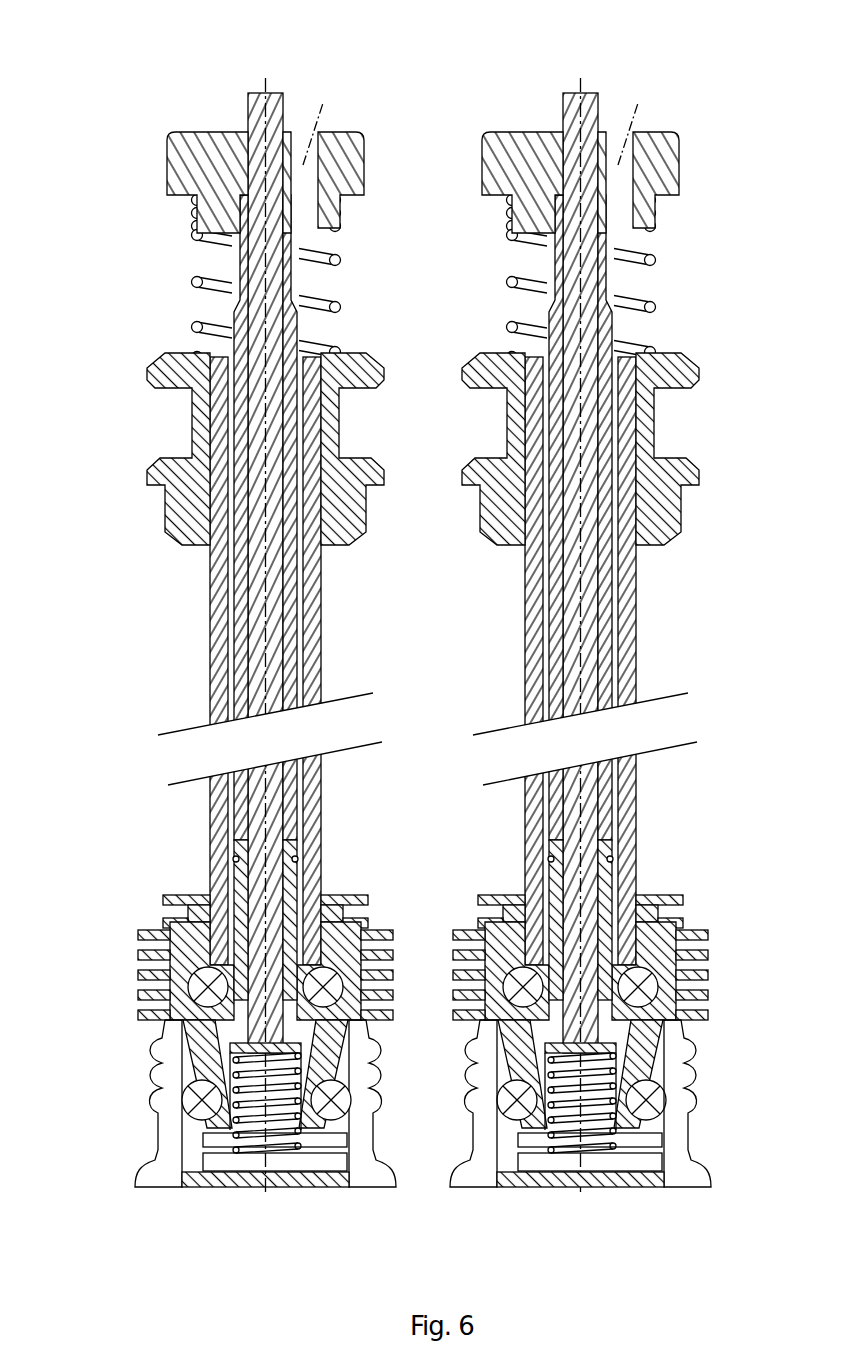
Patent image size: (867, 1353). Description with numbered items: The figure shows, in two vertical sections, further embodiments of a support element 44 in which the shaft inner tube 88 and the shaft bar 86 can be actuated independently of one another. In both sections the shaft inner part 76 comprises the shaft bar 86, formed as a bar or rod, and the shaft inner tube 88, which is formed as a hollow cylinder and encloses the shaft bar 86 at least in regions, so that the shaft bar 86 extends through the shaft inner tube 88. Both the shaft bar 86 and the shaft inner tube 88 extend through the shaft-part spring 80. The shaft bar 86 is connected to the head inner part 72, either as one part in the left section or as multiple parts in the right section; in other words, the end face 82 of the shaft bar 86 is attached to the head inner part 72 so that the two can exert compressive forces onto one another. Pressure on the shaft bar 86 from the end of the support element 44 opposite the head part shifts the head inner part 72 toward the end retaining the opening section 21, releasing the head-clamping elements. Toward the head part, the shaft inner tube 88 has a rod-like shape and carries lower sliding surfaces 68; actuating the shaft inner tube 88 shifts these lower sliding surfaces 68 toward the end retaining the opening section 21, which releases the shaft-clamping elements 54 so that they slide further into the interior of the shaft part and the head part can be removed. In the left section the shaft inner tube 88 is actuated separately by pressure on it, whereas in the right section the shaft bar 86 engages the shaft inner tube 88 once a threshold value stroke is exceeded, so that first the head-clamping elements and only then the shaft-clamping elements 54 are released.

The support element 44 is at (232, 92).
The shaft-part spring 80 is at (196, 280).
The shaft inner part 76 is at (240, 457).
The shaft bar 86 is at (262, 620).
The shaft inner tube 88 is at (237, 664).
The shaft-clamping elements 54 is at (152, 943).
The lower sliding surfaces 68 is at (142, 956).
The opening section 21 is at (142, 1178).
The end face 82 is at (672, 1018).
The head inner part 72 is at (670, 1082).